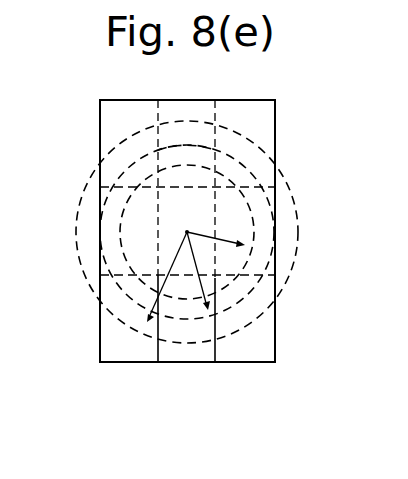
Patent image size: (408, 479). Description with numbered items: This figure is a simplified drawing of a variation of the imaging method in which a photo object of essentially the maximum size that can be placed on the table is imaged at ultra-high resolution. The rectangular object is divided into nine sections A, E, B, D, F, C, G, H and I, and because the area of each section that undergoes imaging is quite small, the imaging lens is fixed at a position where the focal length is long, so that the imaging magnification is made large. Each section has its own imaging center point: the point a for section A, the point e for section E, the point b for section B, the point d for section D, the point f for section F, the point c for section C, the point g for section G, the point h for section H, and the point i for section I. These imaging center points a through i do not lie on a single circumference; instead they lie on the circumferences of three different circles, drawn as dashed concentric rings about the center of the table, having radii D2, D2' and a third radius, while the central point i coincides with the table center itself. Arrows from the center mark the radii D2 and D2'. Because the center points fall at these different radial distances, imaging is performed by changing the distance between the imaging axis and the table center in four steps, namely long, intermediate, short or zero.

The section A is at (124, 100).
The section E is at (187, 100).
The section B is at (249, 100).
The section D is at (122, 364).
The section F is at (184, 364).
The section C is at (247, 364).
The section G is at (101, 216).
The section H is at (275, 190).
The section I is at (118, 198).
The imaging center point a is at (124, 143).
The imaging center point b is at (257, 150).
The imaging center point c is at (250, 318).
The imaging center point d is at (121, 320).
The imaging center point e is at (191, 144).
The imaging center point f is at (186, 318).
The imaging center point g is at (128, 207).
The imaging center point h is at (258, 234).
The imaging center point i is at (174, 242).
The radius D2 is at (152, 277).
The radius D2' is at (209, 271).